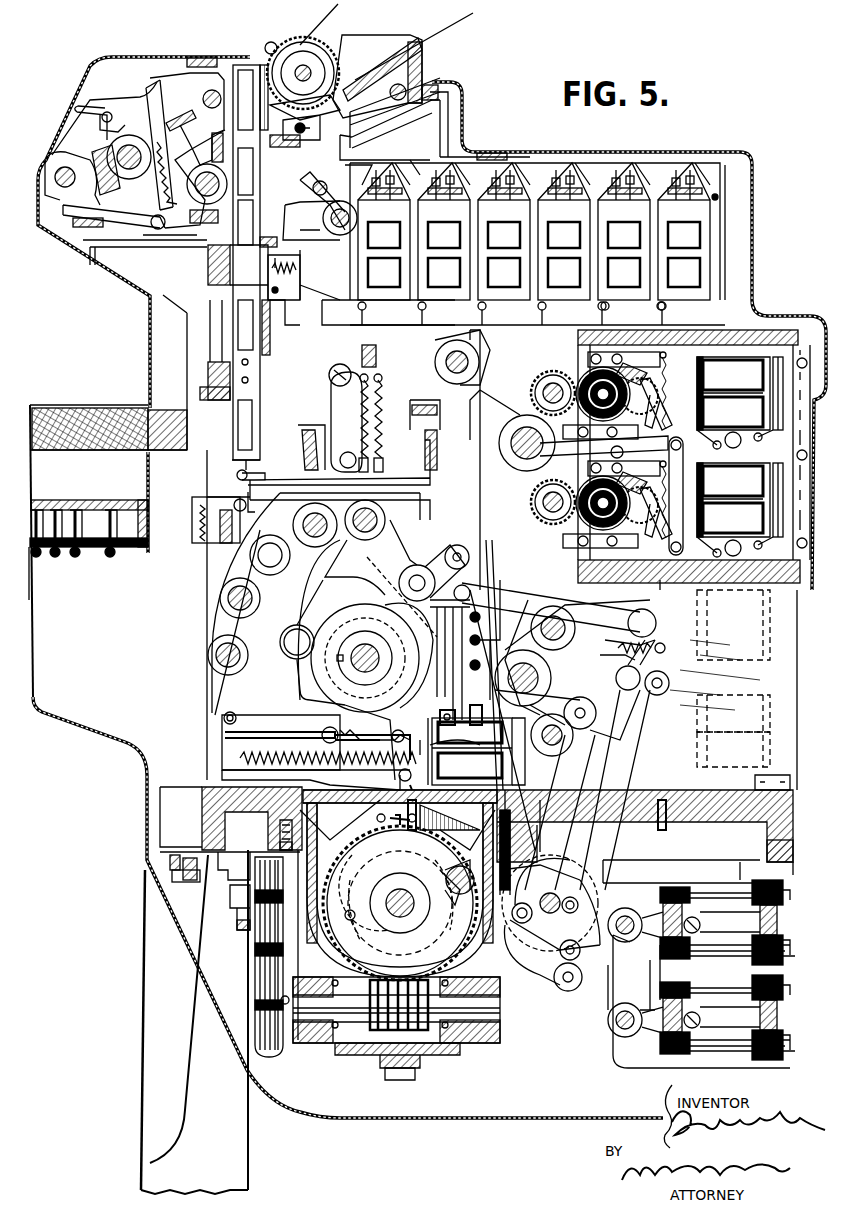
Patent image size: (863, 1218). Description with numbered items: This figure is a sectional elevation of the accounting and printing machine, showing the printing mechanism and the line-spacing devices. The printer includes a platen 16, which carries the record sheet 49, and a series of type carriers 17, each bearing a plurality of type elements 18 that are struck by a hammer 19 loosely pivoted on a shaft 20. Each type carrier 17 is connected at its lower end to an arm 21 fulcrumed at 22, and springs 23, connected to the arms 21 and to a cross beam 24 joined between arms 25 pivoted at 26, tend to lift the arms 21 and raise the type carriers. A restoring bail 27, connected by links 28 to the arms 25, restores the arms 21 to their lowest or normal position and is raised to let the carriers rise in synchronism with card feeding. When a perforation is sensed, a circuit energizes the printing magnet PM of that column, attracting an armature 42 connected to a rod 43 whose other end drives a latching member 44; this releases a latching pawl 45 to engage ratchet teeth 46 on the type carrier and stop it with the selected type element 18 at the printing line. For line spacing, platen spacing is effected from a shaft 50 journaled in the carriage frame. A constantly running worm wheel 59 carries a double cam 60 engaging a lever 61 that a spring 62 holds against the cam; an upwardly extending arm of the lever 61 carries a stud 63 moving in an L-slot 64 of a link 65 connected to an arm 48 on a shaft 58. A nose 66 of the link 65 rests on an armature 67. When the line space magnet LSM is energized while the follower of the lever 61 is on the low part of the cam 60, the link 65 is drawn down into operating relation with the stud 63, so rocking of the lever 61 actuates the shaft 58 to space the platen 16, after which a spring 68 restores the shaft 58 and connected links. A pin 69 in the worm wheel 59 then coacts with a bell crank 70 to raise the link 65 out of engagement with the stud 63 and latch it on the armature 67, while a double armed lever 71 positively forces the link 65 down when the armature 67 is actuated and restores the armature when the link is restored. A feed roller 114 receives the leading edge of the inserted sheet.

The platen 16 is at (286, 45).
The type carrier 17 is at (255, 205).
The type element 18 is at (215, 80).
The hammer 19 is at (155, 100).
The shaft 20 is at (218, 190).
The arm 21 is at (270, 472).
The fulcrum 22 is at (473, 453).
The springs 23 is at (378, 415).
The cross beam 24 is at (363, 352).
The arms 25 is at (395, 345).
The pivot 26 is at (475, 366).
The restoring bail 27 is at (303, 440).
The links 28 is at (340, 408).
The armature 42 is at (655, 295).
The rod 43 is at (603, 298).
The latching member 44 is at (293, 305).
The latching pawl 45 is at (268, 290).
The ratchet teeth 46 is at (267, 337).
The arm 48 is at (222, 680).
The record sheet 49 is at (322, 18).
The shaft 50 is at (390, 95).
The shaft 58 is at (216, 651).
The worm wheel 59 is at (432, 952).
The double cam 60 is at (392, 942).
The lever 61 is at (450, 845).
The spring 62 is at (445, 818).
The stud 63 is at (413, 727).
The L-slot 64 is at (352, 808).
The link 65 is at (265, 712).
The nose 66 is at (458, 658).
The armature 67 is at (450, 690).
The spring 68 is at (287, 757).
The pin 69 is at (355, 882).
The bell crank 70 is at (370, 848).
The double armed lever 71 is at (462, 690).
The feed roller 114 is at (350, 120).
The printing magnet PM is at (685, 235).
The line space magnet LSM is at (476, 751).